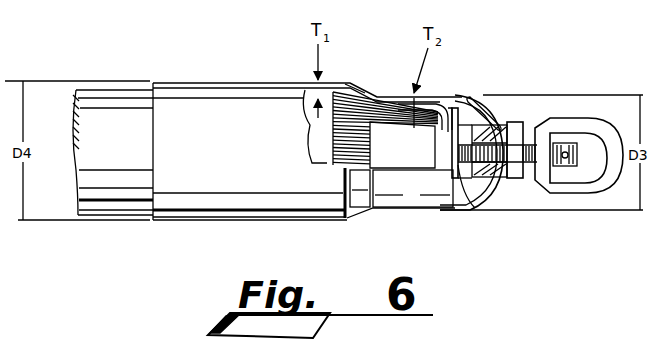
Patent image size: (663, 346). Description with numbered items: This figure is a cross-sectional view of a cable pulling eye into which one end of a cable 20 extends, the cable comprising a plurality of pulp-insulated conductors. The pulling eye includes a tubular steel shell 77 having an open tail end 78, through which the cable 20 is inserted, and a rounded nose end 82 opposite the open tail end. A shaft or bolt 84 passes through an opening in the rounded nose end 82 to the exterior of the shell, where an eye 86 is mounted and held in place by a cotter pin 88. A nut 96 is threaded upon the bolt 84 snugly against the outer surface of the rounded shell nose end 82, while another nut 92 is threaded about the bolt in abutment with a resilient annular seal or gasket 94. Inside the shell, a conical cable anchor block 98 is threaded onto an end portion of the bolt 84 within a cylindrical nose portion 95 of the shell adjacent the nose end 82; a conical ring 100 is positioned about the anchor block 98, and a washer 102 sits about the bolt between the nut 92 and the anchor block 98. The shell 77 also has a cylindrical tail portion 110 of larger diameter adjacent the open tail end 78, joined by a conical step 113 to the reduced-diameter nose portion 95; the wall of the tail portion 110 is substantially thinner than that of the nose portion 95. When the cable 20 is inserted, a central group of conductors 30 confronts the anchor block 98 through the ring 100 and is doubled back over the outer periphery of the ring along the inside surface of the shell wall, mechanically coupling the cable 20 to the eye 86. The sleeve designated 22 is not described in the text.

The cable 20 is at (177, 52).
The metal sleeve 22 is at (220, 80).
The conductors 30 is at (462, 126).
The tubular steel shell 77 is at (265, 222).
The open tail end 78 is at (153, 85).
The rounded nose end 82 is at (493, 100).
The bolt 84 is at (533, 132).
The eye 86 is at (588, 188).
The cotter pin 88 is at (563, 166).
The nut 92 is at (464, 168).
The resilient annular seal 94 is at (486, 172).
The cylindrical nose portion 95 is at (392, 213).
The nut 96 is at (516, 122).
The conical cable anchor block 98 is at (417, 158).
The conical ring 100 is at (429, 108).
The washer 102 is at (468, 130).
The cylindrical tail portion 110 is at (203, 222).
The conical step 113 is at (359, 86).